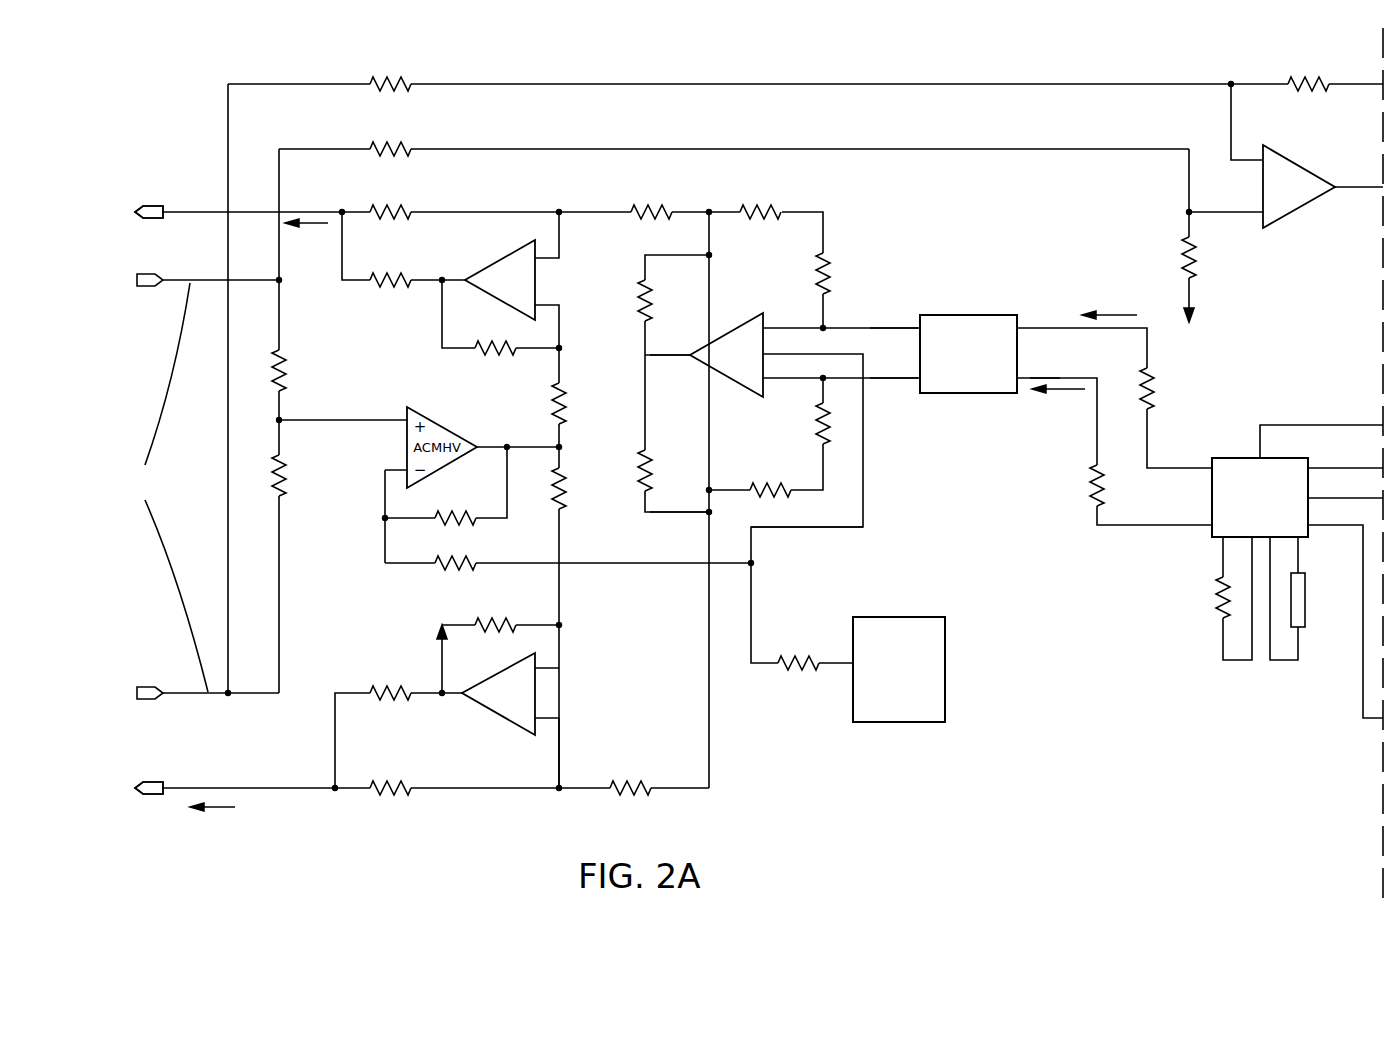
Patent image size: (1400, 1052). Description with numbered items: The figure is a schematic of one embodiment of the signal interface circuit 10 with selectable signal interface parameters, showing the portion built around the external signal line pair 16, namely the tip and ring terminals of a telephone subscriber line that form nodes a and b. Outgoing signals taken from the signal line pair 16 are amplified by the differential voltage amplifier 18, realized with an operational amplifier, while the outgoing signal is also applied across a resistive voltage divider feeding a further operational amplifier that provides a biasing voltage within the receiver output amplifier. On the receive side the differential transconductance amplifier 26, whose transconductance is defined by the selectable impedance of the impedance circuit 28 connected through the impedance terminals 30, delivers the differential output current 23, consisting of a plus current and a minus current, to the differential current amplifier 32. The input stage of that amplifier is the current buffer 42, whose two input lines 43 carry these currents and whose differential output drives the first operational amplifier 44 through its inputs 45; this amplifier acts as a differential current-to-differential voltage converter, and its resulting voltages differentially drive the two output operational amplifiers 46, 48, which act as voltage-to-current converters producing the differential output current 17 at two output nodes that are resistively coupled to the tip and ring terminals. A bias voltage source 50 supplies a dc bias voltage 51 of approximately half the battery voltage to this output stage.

The signal interface circuit 10 is at (511, 826).
The external signal line pair 16 is at (168, 487).
The differential output current 17 is at (196, 208).
The differential voltage amplifier 18 is at (1336, 153).
The differential output current 23 is at (1046, 378).
The differential transconductance amplifier 26 is at (1210, 540).
The impedance circuit 28 is at (1302, 625).
The impedance terminals 30 is at (1298, 545).
The differential current amplifier 32 is at (686, 552).
The current buffer 42 is at (982, 315).
The current buffer input lines 43 is at (877, 328).
The first operational amplifier 44 is at (750, 318).
The ATHV amplifier inputs 45 is at (692, 368).
The output operational amplifier 46 is at (520, 250).
The output operational amplifier 48 is at (500, 718).
The bias voltage source 50 is at (923, 617).
The dc bias voltage 51 is at (845, 528).